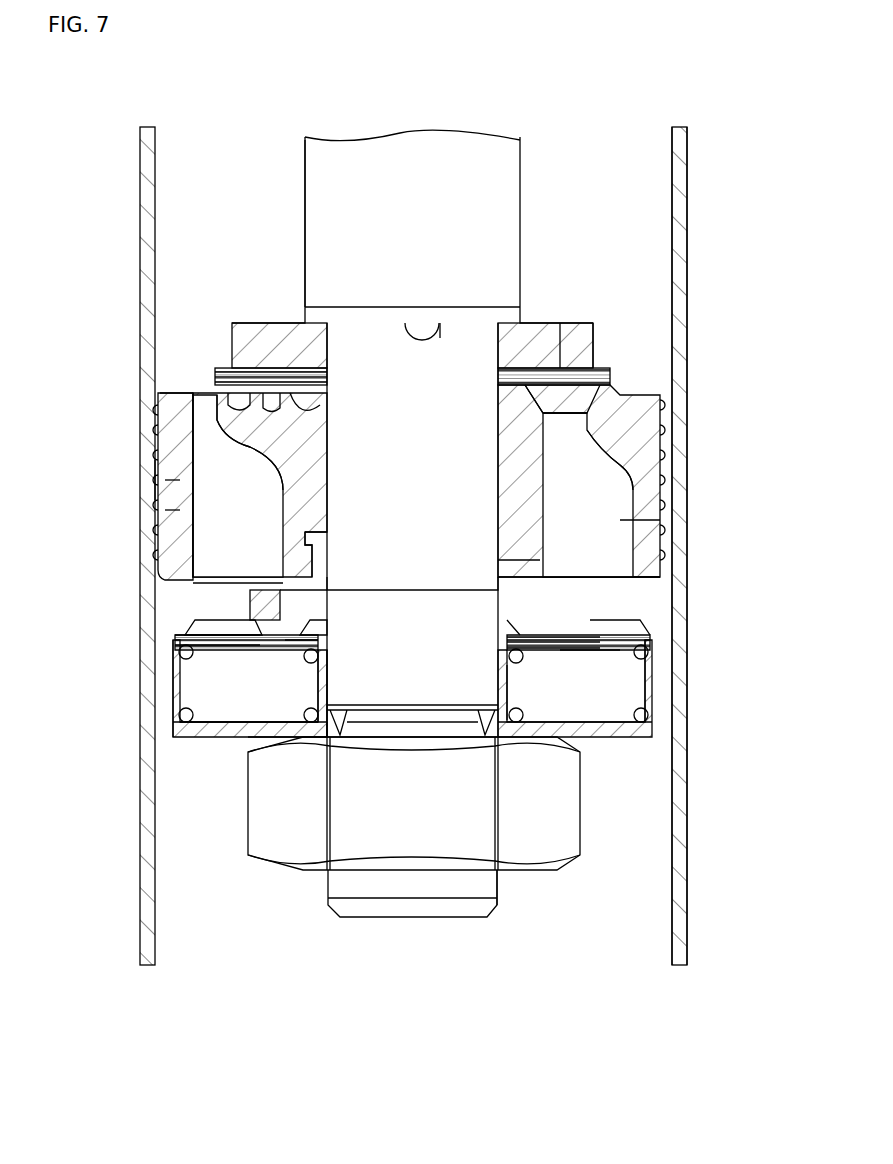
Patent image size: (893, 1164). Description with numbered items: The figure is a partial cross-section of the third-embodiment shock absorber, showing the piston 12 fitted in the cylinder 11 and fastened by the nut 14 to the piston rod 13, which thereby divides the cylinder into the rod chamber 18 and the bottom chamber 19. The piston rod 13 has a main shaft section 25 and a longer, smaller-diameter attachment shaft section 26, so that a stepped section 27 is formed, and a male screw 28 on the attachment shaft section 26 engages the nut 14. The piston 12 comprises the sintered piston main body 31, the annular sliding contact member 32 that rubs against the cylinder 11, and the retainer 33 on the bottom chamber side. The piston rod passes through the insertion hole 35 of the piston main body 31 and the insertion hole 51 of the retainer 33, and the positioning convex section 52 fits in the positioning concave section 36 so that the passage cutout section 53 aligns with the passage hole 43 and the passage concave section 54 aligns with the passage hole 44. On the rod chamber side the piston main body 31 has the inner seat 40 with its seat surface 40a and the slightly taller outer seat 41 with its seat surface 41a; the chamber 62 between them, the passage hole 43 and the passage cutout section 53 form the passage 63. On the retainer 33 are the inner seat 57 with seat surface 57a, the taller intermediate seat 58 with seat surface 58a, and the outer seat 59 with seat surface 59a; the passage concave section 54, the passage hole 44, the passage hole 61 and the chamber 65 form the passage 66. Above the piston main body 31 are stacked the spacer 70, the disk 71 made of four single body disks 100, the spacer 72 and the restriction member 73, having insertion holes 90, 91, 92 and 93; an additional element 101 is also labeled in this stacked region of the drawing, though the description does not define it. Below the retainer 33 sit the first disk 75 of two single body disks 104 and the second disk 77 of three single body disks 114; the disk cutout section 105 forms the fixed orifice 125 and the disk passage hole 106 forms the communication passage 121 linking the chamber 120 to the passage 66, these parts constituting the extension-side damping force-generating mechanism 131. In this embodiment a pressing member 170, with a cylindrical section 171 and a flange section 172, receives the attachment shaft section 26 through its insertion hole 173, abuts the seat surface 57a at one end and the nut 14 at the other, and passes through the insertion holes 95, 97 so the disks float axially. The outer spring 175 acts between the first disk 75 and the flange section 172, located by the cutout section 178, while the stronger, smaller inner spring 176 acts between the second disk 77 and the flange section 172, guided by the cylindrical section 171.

The cylinder 11 is at (138, 145).
The piston 12 is at (150, 480).
The piston rod 13 is at (487, 130).
The nut 14 is at (293, 875).
The rod chamber 18 is at (625, 148).
The bottom chamber 19 is at (600, 940).
The main shaft section 25 is at (420, 140).
The attachment shaft section 26 is at (363, 917).
The stepped section 27 is at (440, 325).
The male screw 28 is at (497, 885).
The piston main body 31 is at (570, 420).
The sliding contact member 32 is at (585, 470).
The retainer 33 is at (510, 590).
The insertion hole 35 is at (180, 490).
The positioning concave section 36 is at (265, 545).
The inner seat 40 is at (245, 345).
The seat surface 40a is at (593, 325).
The outer seat 41 is at (210, 425).
The seat surface 41a is at (575, 395).
The passage hole 43 is at (540, 530).
The passage hole 44 is at (220, 475).
The insertion hole 51 is at (522, 573).
The positioning convex section 52 is at (262, 600).
The passage cutout section 53 is at (600, 612).
The passage concave section 54 is at (240, 580).
The inner seat 57 is at (620, 632).
The seat surface 57a is at (640, 712).
The intermediate seat 58 is at (632, 640).
The seat surface 58a is at (560, 680).
The outer seat 59 is at (645, 650).
The seat surface 59a is at (560, 665).
The passage hole 61 is at (300, 578).
The chamber 62 is at (560, 395).
The passage 63 is at (605, 400).
The chamber 65 is at (330, 665).
The passage 66 is at (175, 510).
The spacer 70 is at (175, 455).
The disk 71 is at (190, 440).
The spacer 72 is at (265, 400).
The restriction member 73 is at (240, 395).
The first disk 75 is at (240, 680).
The second disk 77 is at (300, 720).
The insertion hole 90 is at (380, 372).
The insertion hole 91 is at (363, 372).
The insertion hole 92 is at (340, 372).
The insertion hole 93 is at (318, 372).
The insertion hole 95 is at (500, 740).
The insertion hole 97 is at (490, 745).
The single body disk 100 is at (612, 378).
The disk 101 is at (618, 368).
The single body disk 104 is at (600, 660).
The disk cutout section 105 is at (290, 642).
The disk passage hole 106 is at (250, 627).
The single body disk 114 is at (520, 690).
The chamber 120 is at (290, 690).
The communication passage 121 is at (300, 622).
The fixed orifice 125 is at (173, 647).
The damping force-generating mechanism 131 is at (200, 660).
The pressing member 170 is at (330, 745).
The cylindrical section 171 is at (280, 745).
The flange section 172 is at (340, 700).
The insertion hole 173 is at (337, 742).
The outer spring 175 is at (645, 725).
The inner spring 176 is at (520, 730).
The cutout section 178 is at (300, 700).